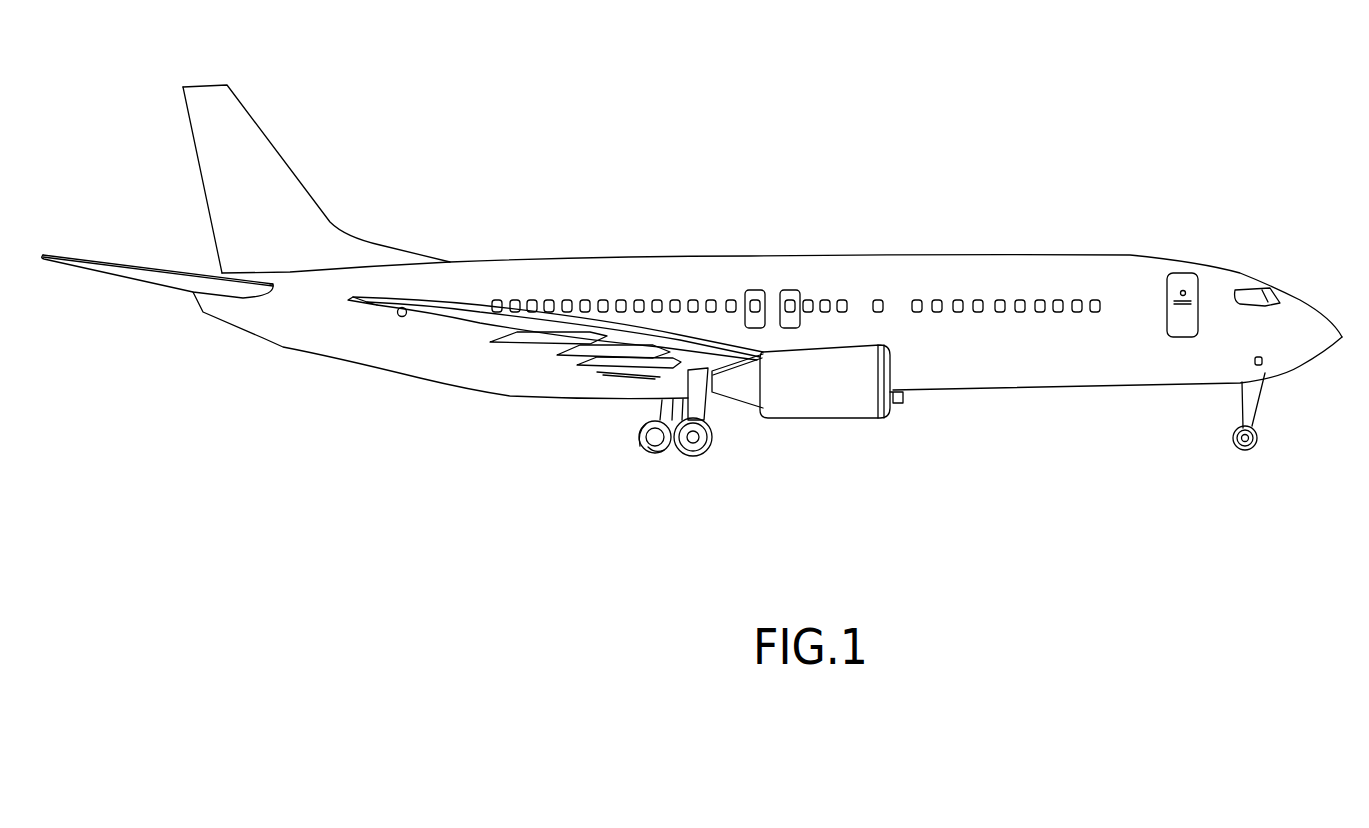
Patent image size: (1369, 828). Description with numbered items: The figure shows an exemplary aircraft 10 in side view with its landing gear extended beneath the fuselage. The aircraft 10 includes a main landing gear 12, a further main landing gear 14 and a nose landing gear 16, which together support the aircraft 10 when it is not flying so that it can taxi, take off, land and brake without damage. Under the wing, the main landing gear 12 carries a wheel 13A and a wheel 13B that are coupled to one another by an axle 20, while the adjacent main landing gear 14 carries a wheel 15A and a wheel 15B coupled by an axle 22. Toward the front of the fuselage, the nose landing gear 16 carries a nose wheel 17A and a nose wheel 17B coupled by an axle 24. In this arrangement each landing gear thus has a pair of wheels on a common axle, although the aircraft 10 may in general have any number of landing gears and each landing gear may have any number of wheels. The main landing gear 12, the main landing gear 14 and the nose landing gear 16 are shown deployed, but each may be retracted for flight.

The aircraft 10 is at (701, 322).
The main landing gear 12 is at (656, 462).
The wheel 13A is at (650, 423).
The wheel 13B is at (657, 448).
The main landing gear 14 is at (718, 452).
The wheel 15A is at (708, 437).
The wheel 15B is at (666, 458).
The nose landing gear 16 is at (1257, 440).
The nose wheel 17A is at (1232, 438).
The nose wheel 17B is at (1257, 438).
The axle 20 is at (643, 440).
The axle 22 is at (697, 445).
The axle 24 is at (1252, 452).